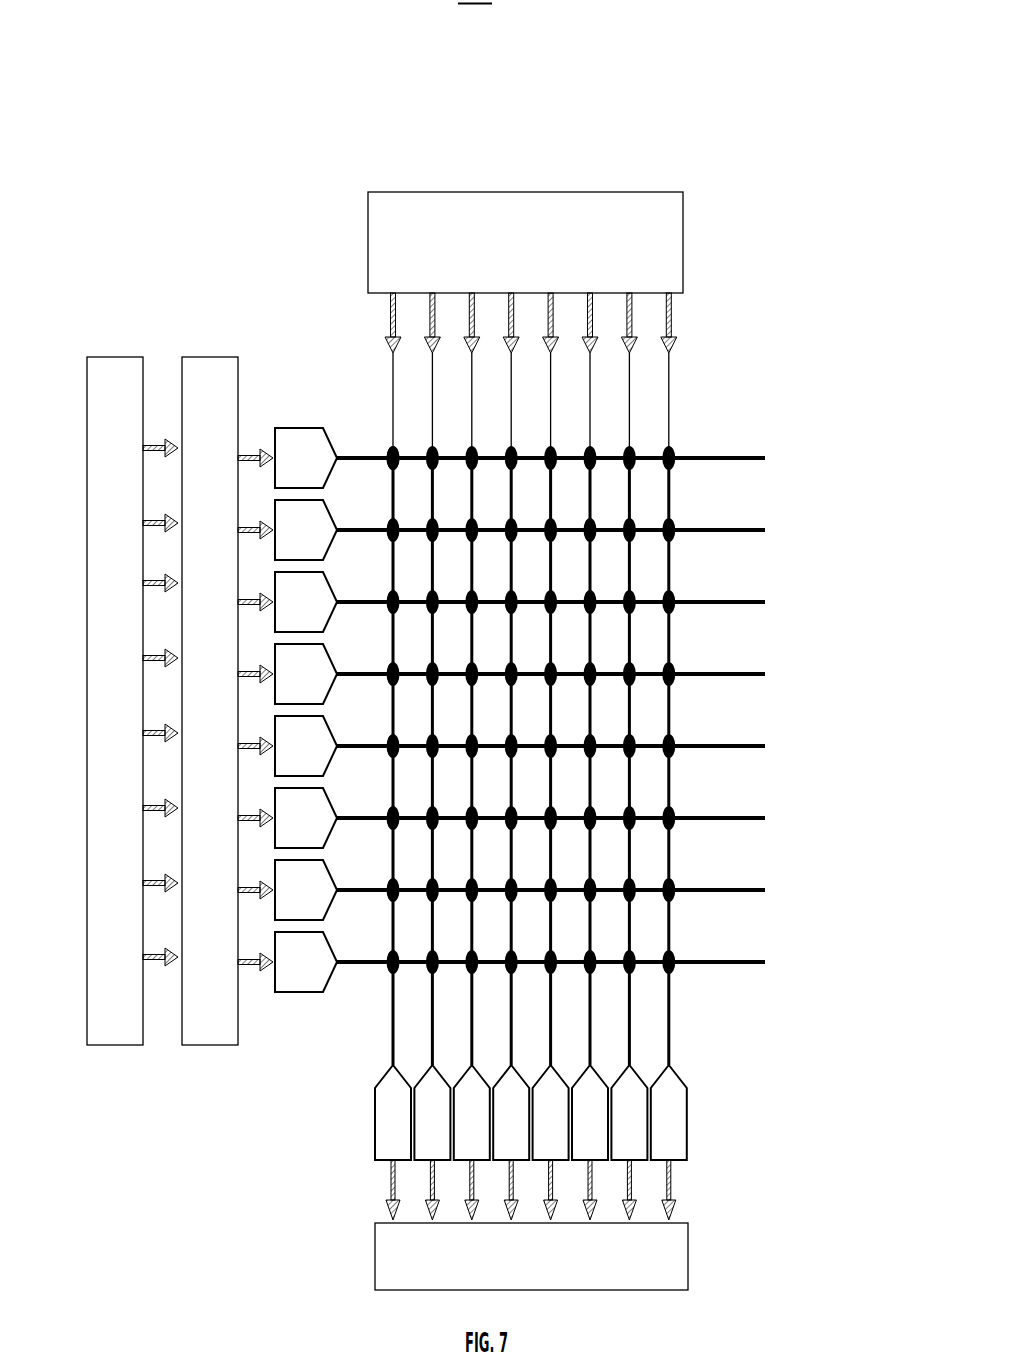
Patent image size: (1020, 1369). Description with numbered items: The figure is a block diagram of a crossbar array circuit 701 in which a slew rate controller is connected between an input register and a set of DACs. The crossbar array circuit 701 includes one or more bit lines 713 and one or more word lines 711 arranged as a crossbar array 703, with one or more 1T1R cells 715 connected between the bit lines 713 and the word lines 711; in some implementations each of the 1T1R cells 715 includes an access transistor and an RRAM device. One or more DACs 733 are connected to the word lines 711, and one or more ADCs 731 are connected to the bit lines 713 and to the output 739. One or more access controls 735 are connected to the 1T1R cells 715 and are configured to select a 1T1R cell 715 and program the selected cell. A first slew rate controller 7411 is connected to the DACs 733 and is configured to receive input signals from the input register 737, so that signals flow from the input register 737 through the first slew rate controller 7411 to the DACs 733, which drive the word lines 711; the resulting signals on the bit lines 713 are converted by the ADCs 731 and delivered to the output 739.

The crossbar array circuit 701 is at (228, 167).
The crossbar array 703 is at (360, 437).
The word lines 711 is at (390, 508).
The bit lines 713 is at (411, 457).
The 1T1R cells 715 is at (380, 457).
The ADCs 731 is at (714, 1069).
The DACs 733 is at (327, 1009).
The access controls 735 is at (368, 232).
The input register 737 is at (116, 357).
The first slew rate controller 7411 is at (210, 357).
The output 739 is at (688, 1257).